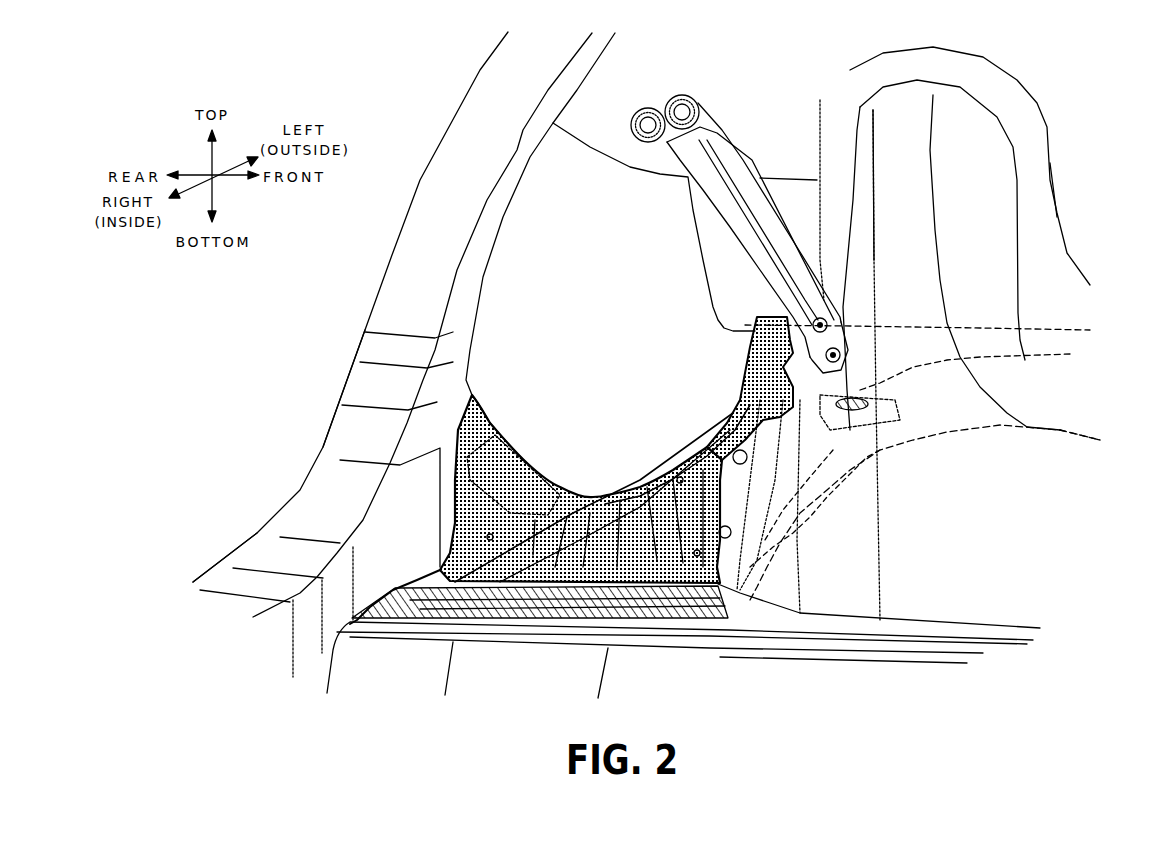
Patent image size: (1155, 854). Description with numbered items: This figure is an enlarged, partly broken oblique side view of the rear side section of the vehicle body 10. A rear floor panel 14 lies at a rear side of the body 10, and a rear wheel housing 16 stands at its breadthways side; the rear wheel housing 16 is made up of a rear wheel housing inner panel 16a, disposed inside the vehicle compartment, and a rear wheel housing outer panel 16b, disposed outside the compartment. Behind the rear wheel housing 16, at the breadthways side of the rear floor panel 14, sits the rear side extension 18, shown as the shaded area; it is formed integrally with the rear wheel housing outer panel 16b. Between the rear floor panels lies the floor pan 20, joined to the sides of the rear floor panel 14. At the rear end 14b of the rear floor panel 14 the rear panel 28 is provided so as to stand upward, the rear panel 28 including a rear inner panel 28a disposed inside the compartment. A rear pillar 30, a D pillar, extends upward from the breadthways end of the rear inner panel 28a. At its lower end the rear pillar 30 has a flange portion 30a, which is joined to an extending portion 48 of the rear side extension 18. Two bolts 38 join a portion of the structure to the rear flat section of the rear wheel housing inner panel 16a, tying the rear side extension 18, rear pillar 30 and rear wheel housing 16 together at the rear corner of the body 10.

The body 10 is at (1076, 96).
The rear floor panel 14 is at (654, 470).
The rear end of the rear floor panel 14b is at (390, 594).
The rear wheel housing 16 is at (1070, 225).
The rear wheel housing inner panel 16a is at (900, 205).
The rear wheel housing outer panel 16b is at (950, 440).
The rear side extension 18 is at (607, 476).
The floor pan 20 is at (387, 665).
The rear panel 28 is at (280, 560).
The rear inner panel 28a is at (403, 560).
The rear pillar 30 is at (427, 233).
The flange portion 30a is at (497, 407).
The bolts 38 is at (731, 467).
The extending portion 48 is at (505, 421).